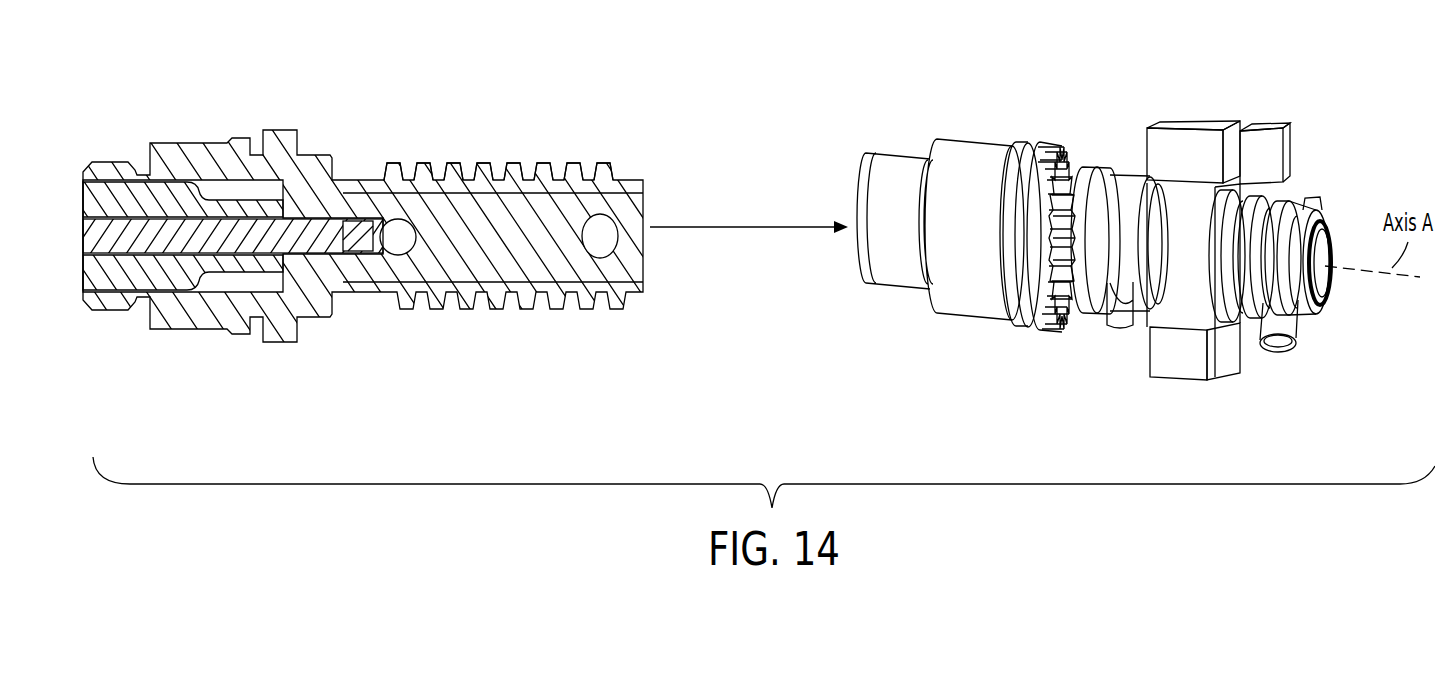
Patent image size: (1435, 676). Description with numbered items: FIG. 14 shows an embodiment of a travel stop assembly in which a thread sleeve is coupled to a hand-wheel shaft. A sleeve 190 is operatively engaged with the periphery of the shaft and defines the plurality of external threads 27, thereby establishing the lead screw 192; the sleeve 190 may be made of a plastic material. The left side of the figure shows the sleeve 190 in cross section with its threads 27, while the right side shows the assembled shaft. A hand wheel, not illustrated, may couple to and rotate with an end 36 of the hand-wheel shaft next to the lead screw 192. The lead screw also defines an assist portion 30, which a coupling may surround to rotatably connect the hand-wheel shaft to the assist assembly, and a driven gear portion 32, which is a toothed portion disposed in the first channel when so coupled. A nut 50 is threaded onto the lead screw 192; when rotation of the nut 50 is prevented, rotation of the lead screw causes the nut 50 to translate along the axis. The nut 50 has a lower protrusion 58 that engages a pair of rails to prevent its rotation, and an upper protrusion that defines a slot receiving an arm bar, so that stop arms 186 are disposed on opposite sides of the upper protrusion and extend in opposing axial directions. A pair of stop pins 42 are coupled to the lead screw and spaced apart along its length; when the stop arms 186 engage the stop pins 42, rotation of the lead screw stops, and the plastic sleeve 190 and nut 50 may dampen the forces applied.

The external threads 27 is at (488, 162).
The assist portion 30 is at (1106, 268).
The driven gear portion 32 is at (1074, 140).
The end of the hand-wheel shaft 36 is at (862, 182).
The stop pins 42 is at (1275, 343).
The nut 50 is at (1168, 296).
The lower protrusion 58 is at (1179, 352).
The stop arms 186 is at (1165, 135).
The sleeve 190 is at (570, 155).
The lead screw 192 is at (504, 252).